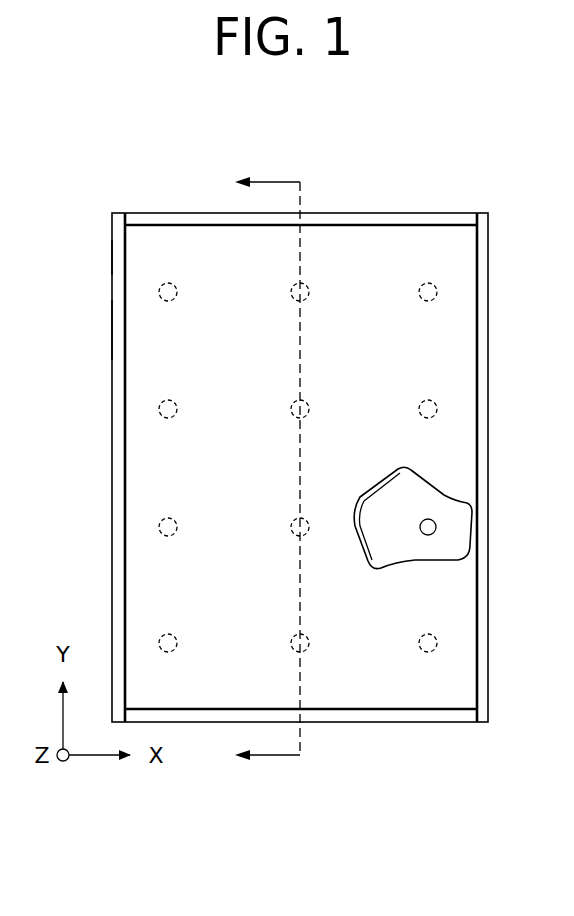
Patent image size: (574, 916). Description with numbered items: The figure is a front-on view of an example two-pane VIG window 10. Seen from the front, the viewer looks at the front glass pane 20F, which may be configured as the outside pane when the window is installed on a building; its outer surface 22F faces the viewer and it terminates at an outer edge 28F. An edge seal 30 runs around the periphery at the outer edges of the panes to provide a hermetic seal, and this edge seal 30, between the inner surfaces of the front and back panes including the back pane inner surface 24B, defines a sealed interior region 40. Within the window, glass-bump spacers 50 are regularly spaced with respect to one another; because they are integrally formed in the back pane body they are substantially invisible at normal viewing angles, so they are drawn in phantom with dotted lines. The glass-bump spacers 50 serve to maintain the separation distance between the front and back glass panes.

The VIG window 10 is at (158, 175).
The front glass pane 20F is at (424, 240).
The outer surface of front glass pane 22F is at (145, 330).
The inner surface of back glass pane 24B is at (460, 548).
The outer edge of front glass pane 28F is at (118, 258).
The edge seal 30 is at (338, 222).
The sealed interior region 40 is at (452, 507).
The glass-bump spacers 50 is at (291, 410).